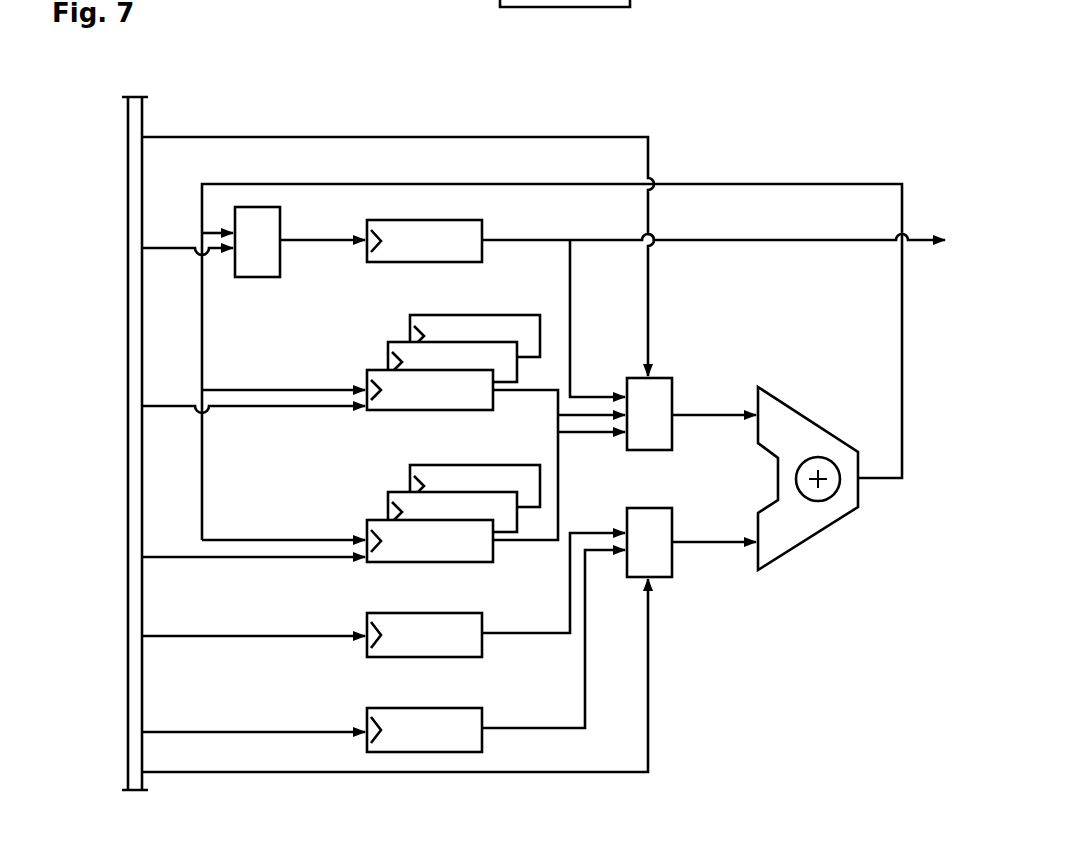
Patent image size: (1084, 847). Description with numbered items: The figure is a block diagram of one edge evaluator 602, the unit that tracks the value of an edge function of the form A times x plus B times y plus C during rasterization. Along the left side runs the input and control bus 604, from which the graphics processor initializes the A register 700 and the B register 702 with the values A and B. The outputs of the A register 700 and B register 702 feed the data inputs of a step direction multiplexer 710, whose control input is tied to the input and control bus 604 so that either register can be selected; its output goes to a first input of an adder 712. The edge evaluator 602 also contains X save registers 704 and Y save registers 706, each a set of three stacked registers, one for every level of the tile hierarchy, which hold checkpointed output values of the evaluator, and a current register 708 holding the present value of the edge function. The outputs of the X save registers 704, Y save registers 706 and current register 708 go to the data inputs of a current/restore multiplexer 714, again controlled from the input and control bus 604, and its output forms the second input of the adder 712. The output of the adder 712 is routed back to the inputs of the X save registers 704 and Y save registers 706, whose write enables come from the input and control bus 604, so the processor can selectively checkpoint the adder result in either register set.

The edge evaluator 602 is at (872, 153).
The input and control bus 604 is at (146, 97).
The A register 700 is at (367, 709).
The B register 702 is at (258, 277).
The X save registers 704 is at (485, 562).
The Y save registers 706 is at (485, 410).
The current register 708 is at (482, 262).
The step direction multiplexer 710 is at (672, 577).
The adder 712 is at (758, 570).
The current/restore multiplexer 714 is at (672, 450).